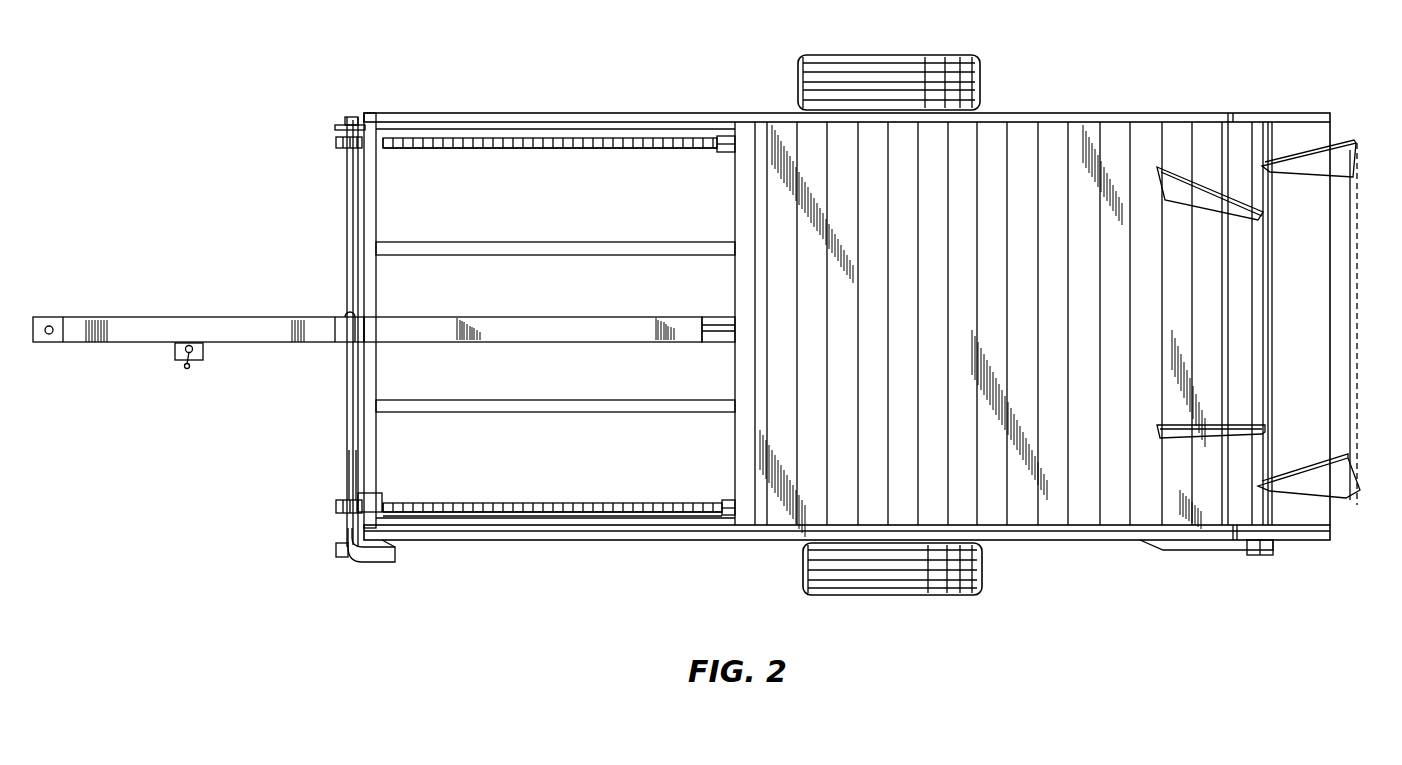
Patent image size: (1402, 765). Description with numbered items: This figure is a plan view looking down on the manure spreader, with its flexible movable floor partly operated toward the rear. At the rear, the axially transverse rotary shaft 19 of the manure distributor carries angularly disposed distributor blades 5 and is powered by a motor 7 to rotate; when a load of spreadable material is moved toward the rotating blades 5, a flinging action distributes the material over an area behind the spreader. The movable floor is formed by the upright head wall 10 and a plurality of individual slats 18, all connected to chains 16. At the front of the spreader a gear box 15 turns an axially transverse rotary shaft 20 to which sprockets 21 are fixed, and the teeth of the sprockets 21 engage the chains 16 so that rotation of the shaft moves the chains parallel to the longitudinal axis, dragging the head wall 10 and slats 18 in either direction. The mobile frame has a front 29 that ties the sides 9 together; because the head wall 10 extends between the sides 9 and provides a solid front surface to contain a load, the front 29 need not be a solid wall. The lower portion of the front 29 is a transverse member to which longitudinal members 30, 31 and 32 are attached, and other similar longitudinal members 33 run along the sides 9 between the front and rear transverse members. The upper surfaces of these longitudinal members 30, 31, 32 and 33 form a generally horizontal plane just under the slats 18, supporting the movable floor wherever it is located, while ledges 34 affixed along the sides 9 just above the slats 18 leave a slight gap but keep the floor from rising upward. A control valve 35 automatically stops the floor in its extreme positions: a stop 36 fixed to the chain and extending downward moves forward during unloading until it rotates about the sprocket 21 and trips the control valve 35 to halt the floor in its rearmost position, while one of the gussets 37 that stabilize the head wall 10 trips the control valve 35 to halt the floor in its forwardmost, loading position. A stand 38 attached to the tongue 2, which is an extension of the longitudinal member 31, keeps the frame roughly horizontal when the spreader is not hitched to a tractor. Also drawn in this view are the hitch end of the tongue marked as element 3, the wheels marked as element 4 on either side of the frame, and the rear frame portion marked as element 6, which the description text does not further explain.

The tongue 2 is at (238, 322).
The hitch coupling 3 is at (47, 320).
The wheel 4 is at (955, 62).
The distributor blades 5 is at (1338, 154).
The rear frame section 6 is at (1300, 112).
The motor 7 is at (1267, 555).
The sides 9 is at (630, 112).
The upright head wall 10 is at (739, 174).
The gear box 15 is at (387, 562).
The chains 16 is at (630, 145).
The slats 18 is at (1092, 495).
The rotary shaft 19 is at (1265, 344).
The rotary shaft 20 is at (348, 245).
The sprockets 21 is at (342, 157).
The front 29 is at (347, 464).
The longitudinal member 30 is at (415, 243).
The longitudinal member 31 is at (447, 320).
The longitudinal member 32 is at (445, 403).
The longitudinal members 33 is at (548, 138).
The ledges 34 is at (1128, 112).
The control valve 35 is at (382, 493).
The stop 36 is at (668, 503).
The gussets 37 is at (726, 140).
The stand 38 is at (190, 362).